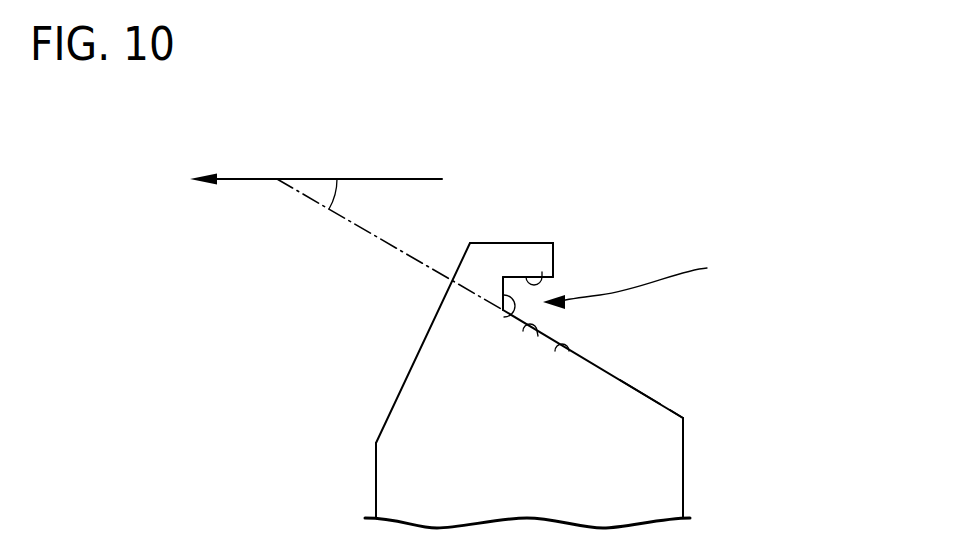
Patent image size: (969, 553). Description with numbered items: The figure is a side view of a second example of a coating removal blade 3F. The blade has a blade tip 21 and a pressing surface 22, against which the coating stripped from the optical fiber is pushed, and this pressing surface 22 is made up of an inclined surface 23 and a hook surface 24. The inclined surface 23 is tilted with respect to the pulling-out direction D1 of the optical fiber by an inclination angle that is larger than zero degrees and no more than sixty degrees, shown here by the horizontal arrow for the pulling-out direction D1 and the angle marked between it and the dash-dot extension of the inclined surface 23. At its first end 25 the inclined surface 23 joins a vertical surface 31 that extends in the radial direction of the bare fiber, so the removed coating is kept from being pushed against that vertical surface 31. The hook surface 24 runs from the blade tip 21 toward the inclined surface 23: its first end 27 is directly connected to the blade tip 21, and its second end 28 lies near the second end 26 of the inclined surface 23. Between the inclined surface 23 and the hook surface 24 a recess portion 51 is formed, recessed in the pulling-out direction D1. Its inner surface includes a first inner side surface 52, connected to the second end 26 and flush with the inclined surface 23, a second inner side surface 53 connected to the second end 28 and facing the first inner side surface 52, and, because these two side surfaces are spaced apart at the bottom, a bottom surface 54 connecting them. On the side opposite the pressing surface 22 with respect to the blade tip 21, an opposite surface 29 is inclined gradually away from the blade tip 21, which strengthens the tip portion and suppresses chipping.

The coating removal blade 3F is at (318, 486).
The blade tip 21 is at (498, 243).
The pressing surface 22 is at (600, 368).
The inclined surface 23 is at (637, 392).
The hook surface 24 is at (553, 258).
The first end of the inclined surface 25 is at (683, 418).
The second end of the inclined surface 26 is at (569, 351).
The first end of the hook surface 27 is at (553, 243).
The second end of the hook surface 28 is at (553, 277).
The opposite surface 29 is at (408, 372).
The vertical surface 31 is at (683, 470).
The recess portion 51 is at (639, 281).
The first inner side surface 52 is at (523, 331).
The second inner side surface 53 is at (528, 277).
The bottom surface 54 is at (504, 317).
The pulling-out direction D1 is at (247, 178).